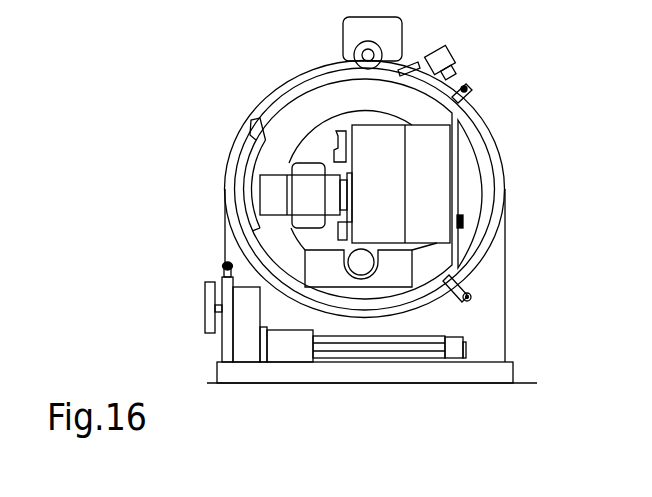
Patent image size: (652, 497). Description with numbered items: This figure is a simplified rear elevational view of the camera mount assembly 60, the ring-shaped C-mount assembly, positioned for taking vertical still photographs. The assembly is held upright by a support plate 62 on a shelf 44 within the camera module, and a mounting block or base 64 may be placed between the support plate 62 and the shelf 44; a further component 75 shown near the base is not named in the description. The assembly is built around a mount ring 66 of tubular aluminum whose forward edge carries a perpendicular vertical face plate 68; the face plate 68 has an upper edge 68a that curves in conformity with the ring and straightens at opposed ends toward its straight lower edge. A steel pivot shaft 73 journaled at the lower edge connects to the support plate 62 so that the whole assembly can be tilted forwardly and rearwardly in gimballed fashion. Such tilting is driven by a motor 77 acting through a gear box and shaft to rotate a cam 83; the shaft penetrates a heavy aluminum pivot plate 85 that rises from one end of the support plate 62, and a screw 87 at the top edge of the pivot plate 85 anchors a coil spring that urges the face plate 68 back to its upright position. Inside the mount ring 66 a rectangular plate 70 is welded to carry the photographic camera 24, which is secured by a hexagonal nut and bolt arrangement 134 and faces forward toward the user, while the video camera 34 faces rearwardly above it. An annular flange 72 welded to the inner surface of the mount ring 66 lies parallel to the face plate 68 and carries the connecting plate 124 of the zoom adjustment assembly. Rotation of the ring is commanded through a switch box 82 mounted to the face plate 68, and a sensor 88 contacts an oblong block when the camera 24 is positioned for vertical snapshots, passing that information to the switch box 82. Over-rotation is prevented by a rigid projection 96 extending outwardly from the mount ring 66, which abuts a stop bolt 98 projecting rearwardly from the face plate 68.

The camera mount assembly 60 is at (242, 79).
The annular flange 72 is at (308, 110).
The sensor 88 is at (410, 62).
The switch box 82 is at (440, 63).
The stop bolt 98 is at (467, 93).
The photographic camera 24 is at (395, 160).
The mount ring 66 is at (487, 162).
The rectangular plate 70 is at (456, 198).
The hexagonal nut and bolt arrangement 134 is at (465, 222).
The vertical face plate 68 is at (495, 260).
The rigid projection 96 is at (541, 304).
The support plate 62 is at (469, 302).
The shelf 44 is at (513, 398).
The upper edge 68a is at (268, 107).
The video camera 34 is at (308, 170).
The connecting plate 124 is at (322, 265).
The screw 87 is at (222, 268).
The cam 83 is at (207, 306).
The pivot plate 85 is at (227, 350).
The motor 77 is at (285, 355).
The pivot shaft 73 is at (337, 348).
The mounting block or base 64 is at (382, 370).
The end stop 75 is at (450, 348).